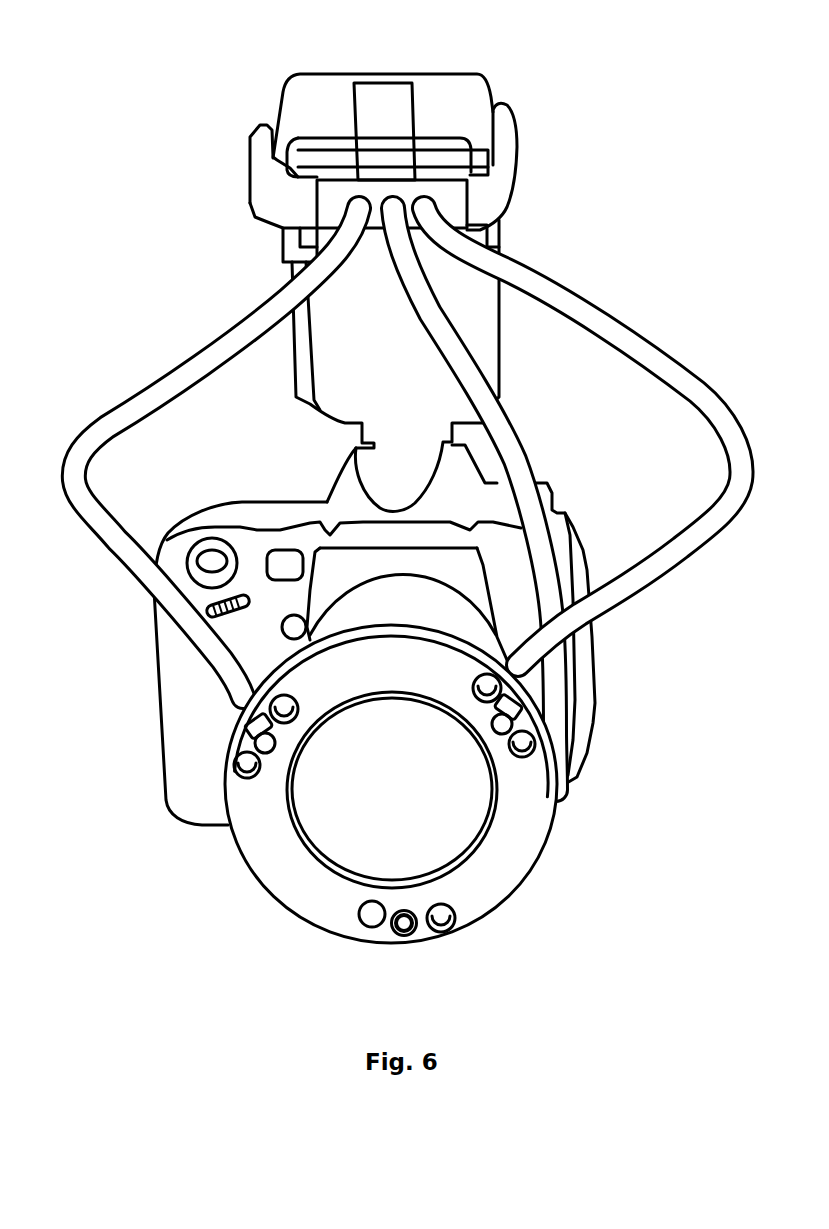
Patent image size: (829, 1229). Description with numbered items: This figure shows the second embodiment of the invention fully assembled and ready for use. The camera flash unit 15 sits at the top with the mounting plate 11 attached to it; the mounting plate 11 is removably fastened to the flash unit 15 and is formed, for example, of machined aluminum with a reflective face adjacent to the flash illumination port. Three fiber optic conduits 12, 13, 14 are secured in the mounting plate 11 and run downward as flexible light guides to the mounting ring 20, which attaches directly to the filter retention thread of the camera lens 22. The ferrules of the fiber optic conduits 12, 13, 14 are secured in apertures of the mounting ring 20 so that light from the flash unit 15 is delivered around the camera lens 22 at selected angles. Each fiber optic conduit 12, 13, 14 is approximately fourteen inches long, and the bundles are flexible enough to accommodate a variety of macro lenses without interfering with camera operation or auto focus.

The mounting plate 11 is at (470, 153).
The fiber optic conduit 12 is at (177, 358).
The fiber optic conduit 13 is at (517, 437).
The fiber optic conduit 14 is at (610, 315).
The camera flash unit 15 is at (290, 263).
The mounting ring 20 is at (283, 907).
The camera lens 22 is at (375, 598).